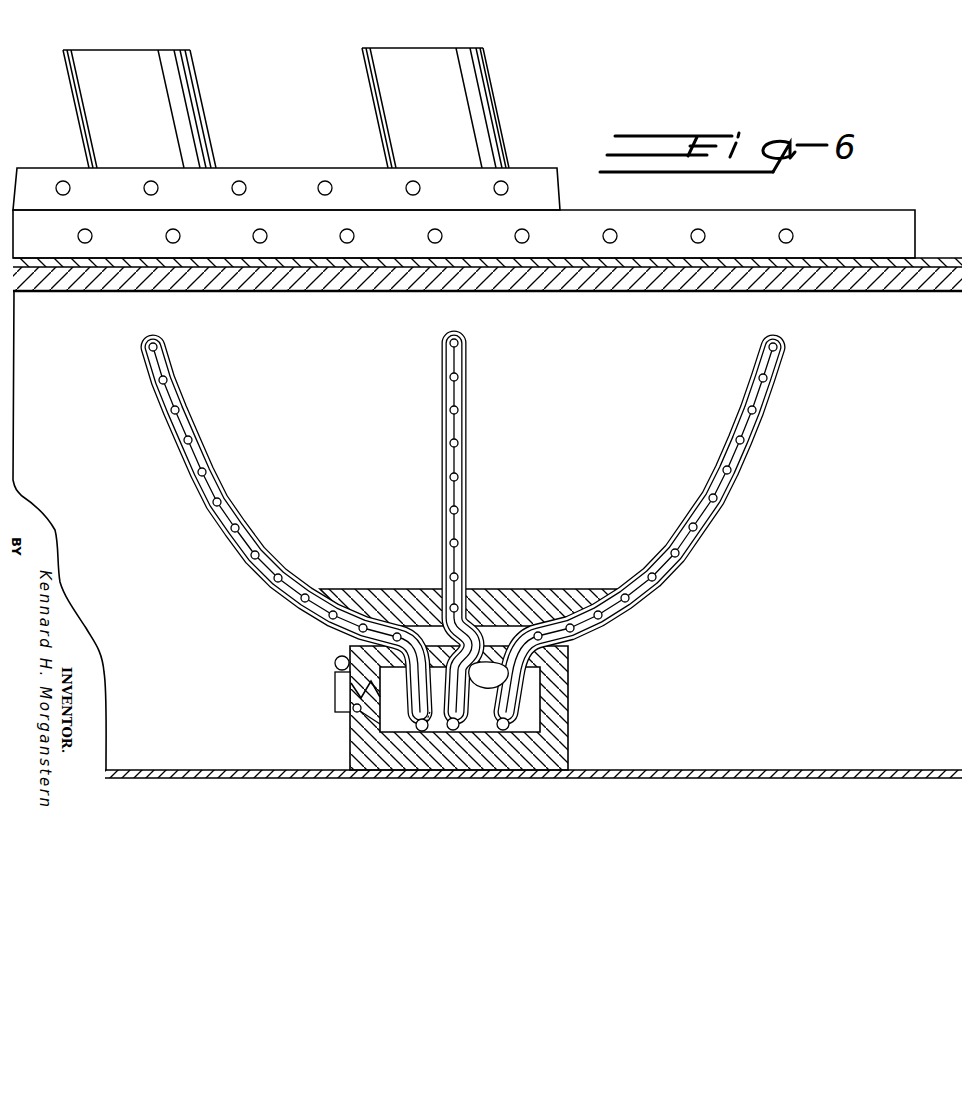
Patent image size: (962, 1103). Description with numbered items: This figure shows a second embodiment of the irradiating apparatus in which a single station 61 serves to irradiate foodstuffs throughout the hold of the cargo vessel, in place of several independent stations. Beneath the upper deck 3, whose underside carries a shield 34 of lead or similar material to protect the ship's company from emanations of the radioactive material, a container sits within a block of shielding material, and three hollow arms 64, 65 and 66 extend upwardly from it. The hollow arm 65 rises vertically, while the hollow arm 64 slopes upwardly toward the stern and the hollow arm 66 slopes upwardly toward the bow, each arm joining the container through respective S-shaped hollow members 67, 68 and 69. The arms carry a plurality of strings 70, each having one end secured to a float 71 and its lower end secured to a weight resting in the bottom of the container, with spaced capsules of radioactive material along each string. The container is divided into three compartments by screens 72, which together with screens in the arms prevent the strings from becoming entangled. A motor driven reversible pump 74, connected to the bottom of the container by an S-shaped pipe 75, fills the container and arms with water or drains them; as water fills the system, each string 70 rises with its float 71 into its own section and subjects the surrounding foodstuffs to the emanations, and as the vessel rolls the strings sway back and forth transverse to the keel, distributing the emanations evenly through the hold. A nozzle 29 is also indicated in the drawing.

The upper deck 3 is at (752, 258).
The shield 34 is at (312, 292).
The single station 61 is at (578, 706).
The hollow arm 64 is at (168, 422).
The hollow arm 65 is at (442, 423).
The hollow arm 66 is at (757, 428).
The S-shaped hollow member 67 is at (419, 630).
The S-shaped hollow member 68 is at (491, 629).
The S-shaped hollow member 69 is at (488, 675).
The strings 70 is at (210, 485).
The float 71 is at (160, 341).
The screens 72 is at (424, 719).
The nozzle 29 is at (430, 720).
The motor driven reversible pump 74 is at (340, 693).
The S-shaped pipe 75 is at (354, 711).